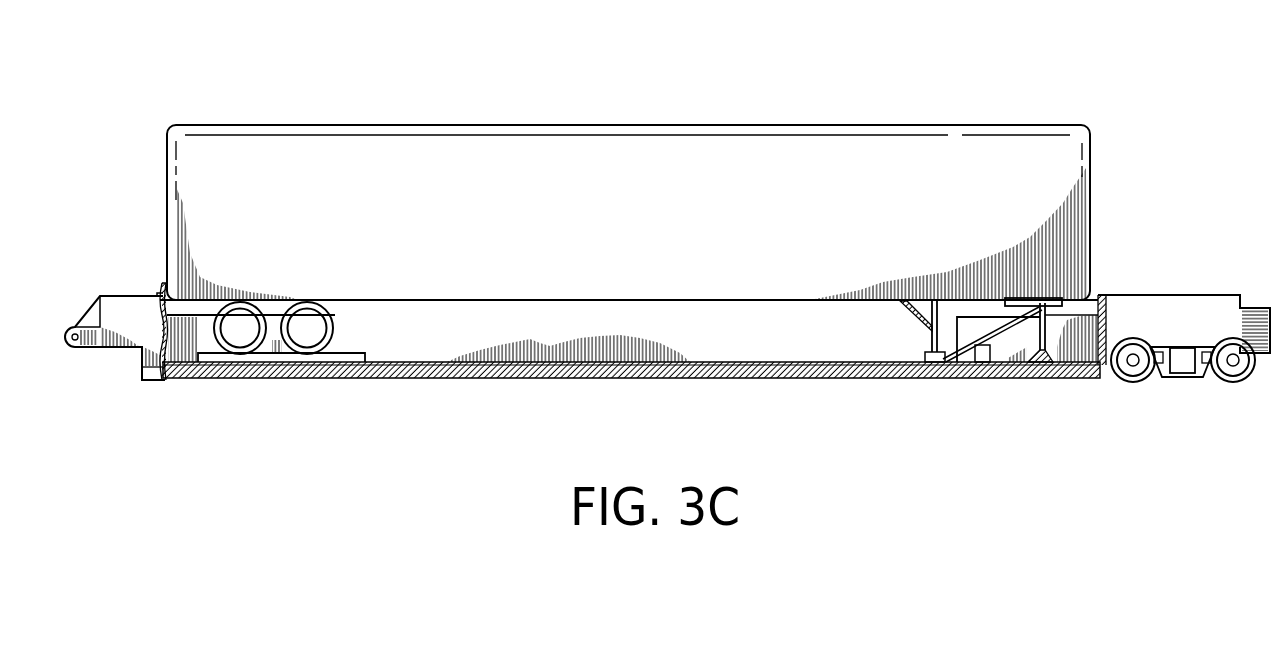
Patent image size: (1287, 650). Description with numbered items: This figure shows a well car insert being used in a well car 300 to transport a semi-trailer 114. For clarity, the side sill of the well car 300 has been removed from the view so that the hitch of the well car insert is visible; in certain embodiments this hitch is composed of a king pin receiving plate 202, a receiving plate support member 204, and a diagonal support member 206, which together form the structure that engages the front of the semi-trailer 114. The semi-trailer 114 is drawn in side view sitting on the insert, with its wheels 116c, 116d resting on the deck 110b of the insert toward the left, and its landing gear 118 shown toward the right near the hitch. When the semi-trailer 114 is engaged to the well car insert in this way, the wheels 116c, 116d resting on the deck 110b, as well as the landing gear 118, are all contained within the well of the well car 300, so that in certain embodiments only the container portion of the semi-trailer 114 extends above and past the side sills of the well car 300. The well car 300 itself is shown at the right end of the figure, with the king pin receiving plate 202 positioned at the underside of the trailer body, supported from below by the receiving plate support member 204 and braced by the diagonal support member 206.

The semi-trailer 114 is at (1033, 150).
The wheel 116c is at (307, 323).
The wheel 116d is at (240, 322).
The deck 110b is at (283, 357).
The landing gear 118 is at (927, 309).
The king pin receiving plate 202 is at (1030, 298).
The receiving plate support member 204 is at (1047, 333).
The diagonal support member 206 is at (968, 350).
The well car 300 is at (1134, 272).